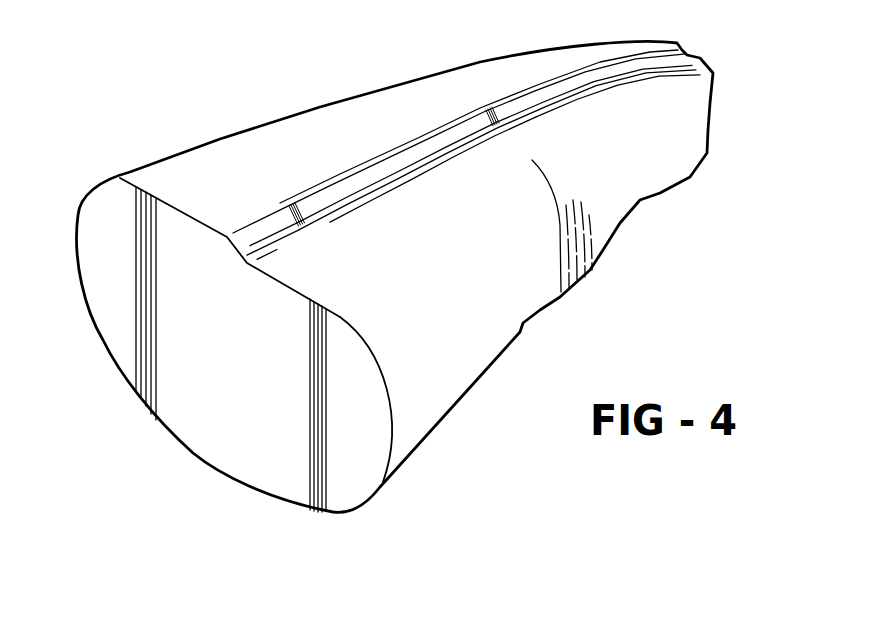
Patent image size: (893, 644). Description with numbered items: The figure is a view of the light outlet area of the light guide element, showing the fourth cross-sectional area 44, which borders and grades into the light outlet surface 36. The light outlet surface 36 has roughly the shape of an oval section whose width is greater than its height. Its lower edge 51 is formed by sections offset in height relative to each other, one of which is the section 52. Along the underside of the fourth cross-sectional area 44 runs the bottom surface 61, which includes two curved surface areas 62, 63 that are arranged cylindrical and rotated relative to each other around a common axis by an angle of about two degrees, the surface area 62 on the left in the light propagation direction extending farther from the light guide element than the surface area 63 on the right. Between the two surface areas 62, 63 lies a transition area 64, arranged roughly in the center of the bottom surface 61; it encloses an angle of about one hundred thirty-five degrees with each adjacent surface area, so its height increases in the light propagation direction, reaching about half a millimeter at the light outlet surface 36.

The light outlet surface 36 is at (350, 387).
The fourth cross-sectional area 44 is at (610, 197).
The lower edge 51 is at (338, 316).
The section 52 is at (365, 338).
The bottom surface 61 is at (240, 165).
The surface area 62 is at (273, 150).
The surface area 63 is at (414, 192).
The transition area 64 is at (448, 135).